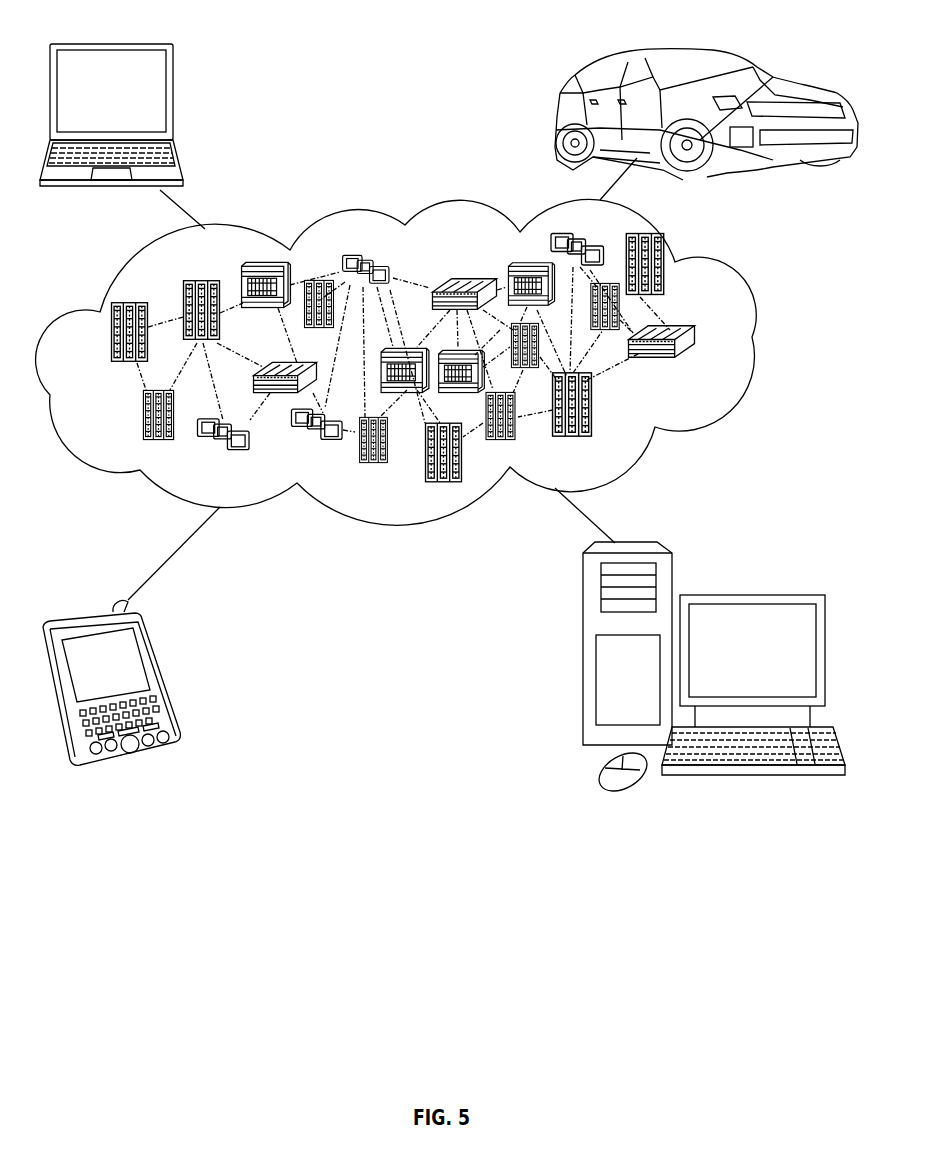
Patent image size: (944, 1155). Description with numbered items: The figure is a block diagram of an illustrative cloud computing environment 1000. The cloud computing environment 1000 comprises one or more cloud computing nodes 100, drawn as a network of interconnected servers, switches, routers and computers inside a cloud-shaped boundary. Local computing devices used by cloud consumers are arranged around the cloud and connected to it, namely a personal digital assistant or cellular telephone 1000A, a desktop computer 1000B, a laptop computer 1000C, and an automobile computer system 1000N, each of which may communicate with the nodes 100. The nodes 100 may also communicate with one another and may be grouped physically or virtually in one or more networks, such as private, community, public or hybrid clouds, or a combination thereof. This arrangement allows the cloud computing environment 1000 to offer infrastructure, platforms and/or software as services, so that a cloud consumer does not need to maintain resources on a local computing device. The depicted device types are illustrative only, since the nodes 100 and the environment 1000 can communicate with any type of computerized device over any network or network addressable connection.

The cloud computing environment 1000 is at (752, 343).
The cloud computing nodes 100 is at (703, 367).
The personal digital assistant (PDA) or cellular telephone 1000A is at (163, 677).
The desktop computer 1000B is at (750, 595).
The laptop computer 1000C is at (174, 102).
The automobile computer system 1000N is at (556, 116).